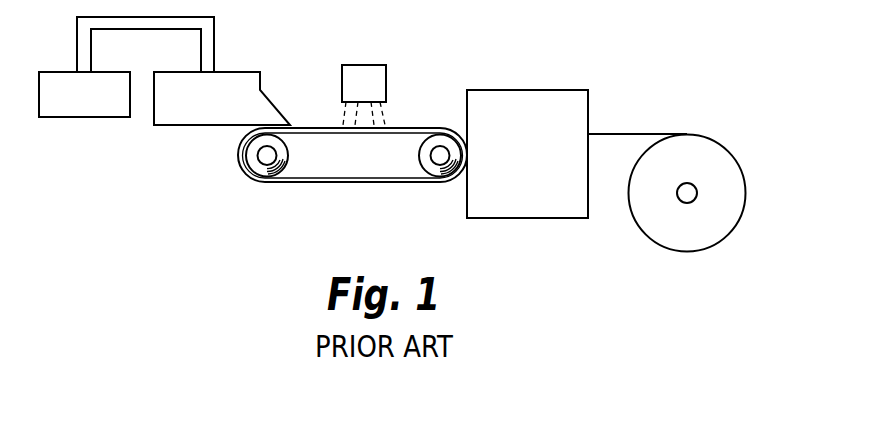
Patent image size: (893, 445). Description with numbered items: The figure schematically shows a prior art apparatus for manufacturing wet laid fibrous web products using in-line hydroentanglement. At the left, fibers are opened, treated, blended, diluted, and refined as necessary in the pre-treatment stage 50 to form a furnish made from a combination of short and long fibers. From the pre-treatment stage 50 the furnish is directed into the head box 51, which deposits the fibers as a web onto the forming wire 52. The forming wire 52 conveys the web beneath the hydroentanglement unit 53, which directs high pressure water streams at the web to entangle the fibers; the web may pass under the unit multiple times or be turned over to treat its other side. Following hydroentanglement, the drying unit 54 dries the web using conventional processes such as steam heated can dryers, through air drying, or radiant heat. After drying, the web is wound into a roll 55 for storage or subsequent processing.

The pre-treatment stage 50 is at (85, 117).
The head box 51 is at (263, 85).
The forming wire 52 is at (367, 183).
The hydroentanglement unit 53 is at (387, 82).
The drying unit 54 is at (539, 90).
The roll 55 is at (745, 183).